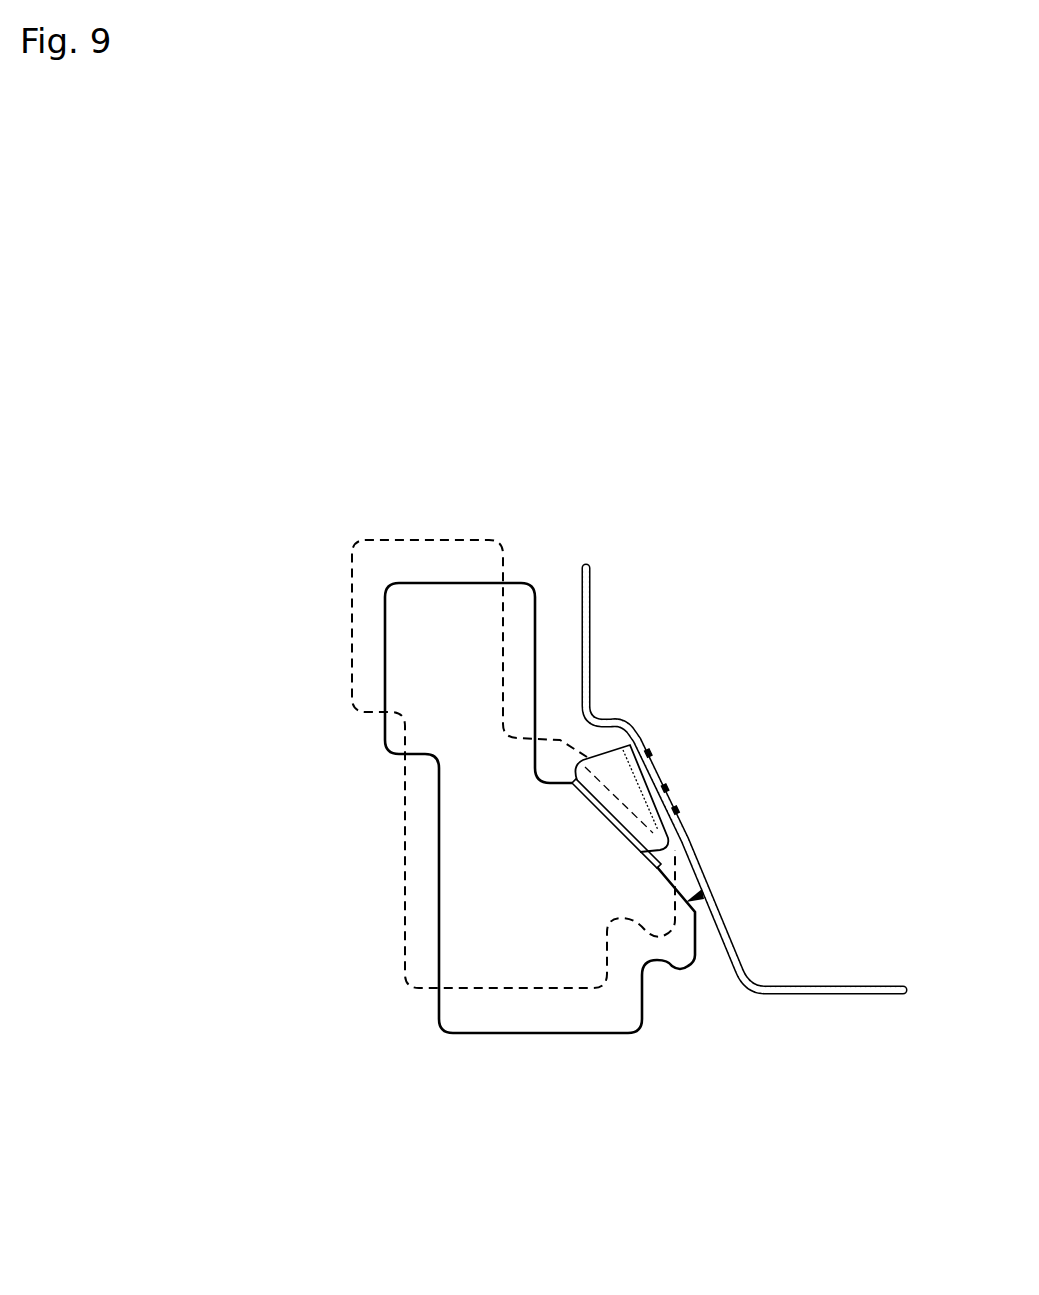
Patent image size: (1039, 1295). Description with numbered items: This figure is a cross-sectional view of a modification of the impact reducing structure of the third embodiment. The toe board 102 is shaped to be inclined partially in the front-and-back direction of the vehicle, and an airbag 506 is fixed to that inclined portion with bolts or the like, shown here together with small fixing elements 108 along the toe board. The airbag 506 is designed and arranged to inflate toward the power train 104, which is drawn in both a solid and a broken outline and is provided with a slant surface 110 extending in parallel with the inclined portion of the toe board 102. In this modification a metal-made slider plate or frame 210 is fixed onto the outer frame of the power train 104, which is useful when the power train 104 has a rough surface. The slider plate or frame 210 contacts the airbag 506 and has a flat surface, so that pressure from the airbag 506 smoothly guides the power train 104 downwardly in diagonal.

The toe board 102 is at (590, 607).
The power train 104 is at (603, 1025).
The protrusions 108 is at (683, 813).
The slant surface 110 is at (700, 895).
The slider plate or frame 210 is at (653, 857).
The airbag 506 is at (608, 742).